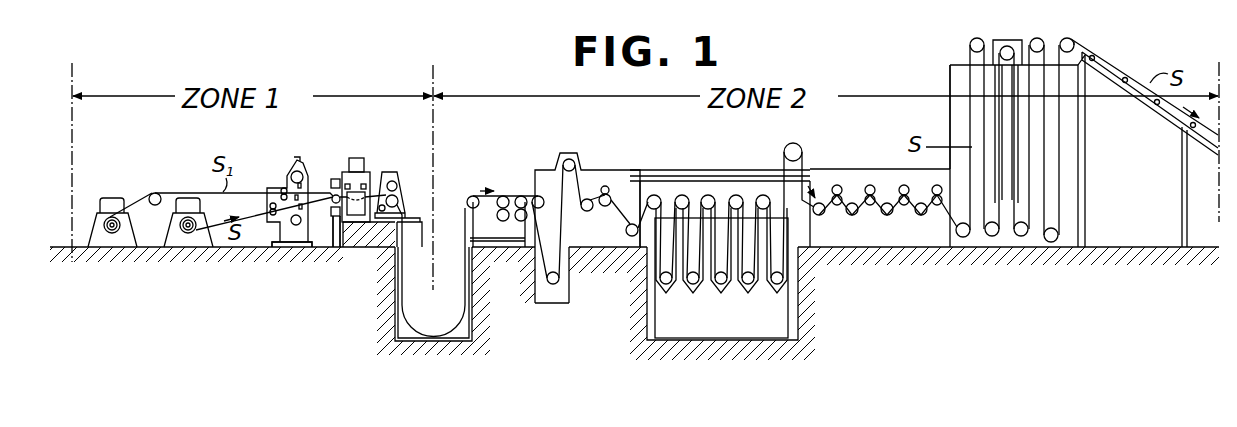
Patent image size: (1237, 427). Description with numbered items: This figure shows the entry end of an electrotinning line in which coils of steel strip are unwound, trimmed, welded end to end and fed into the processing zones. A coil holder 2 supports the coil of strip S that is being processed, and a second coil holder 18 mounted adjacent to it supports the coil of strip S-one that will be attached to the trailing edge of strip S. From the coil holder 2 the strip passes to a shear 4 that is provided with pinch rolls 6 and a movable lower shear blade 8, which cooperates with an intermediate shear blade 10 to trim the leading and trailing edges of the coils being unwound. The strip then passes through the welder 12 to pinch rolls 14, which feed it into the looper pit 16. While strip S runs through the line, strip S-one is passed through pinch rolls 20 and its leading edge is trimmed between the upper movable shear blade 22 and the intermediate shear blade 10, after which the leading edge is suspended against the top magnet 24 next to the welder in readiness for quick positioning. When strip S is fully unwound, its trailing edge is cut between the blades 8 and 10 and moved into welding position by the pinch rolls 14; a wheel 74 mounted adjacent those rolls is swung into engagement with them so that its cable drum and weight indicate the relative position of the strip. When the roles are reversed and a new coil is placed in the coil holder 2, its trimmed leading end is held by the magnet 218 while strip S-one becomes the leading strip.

The second coil holder 18 is at (110, 205).
The coil holder 2 is at (186, 205).
The pinch rolls 20 is at (281, 189).
The upper movable shear blade 22 is at (287, 180).
The shear 4 is at (298, 159).
The pinch rolls 6 is at (271, 213).
The intermediate shear blade 10 is at (283, 201).
The movable lower shear blade 8 is at (300, 248).
The top magnet 24 is at (335, 179).
The magnet 218 is at (334, 216).
The welder 12 is at (356, 166).
The pinch rolls 14 is at (393, 182).
The wheel 74 is at (386, 208).
The looper pit 16 is at (438, 315).